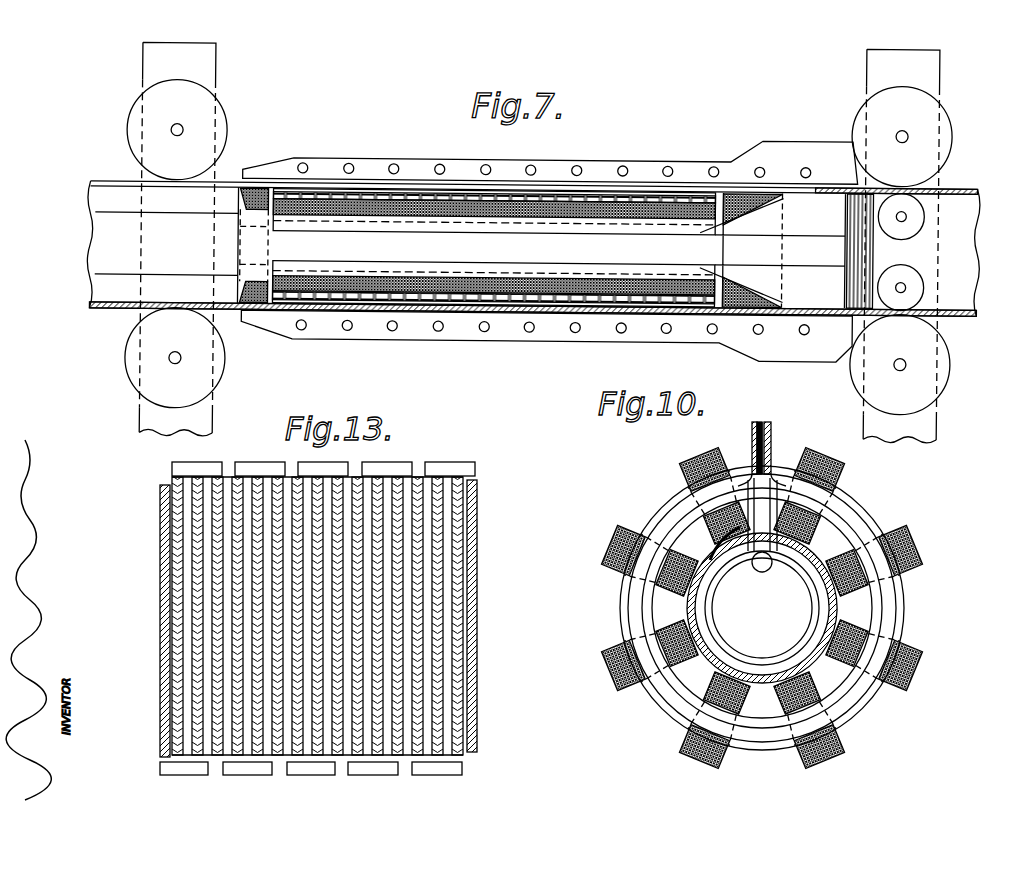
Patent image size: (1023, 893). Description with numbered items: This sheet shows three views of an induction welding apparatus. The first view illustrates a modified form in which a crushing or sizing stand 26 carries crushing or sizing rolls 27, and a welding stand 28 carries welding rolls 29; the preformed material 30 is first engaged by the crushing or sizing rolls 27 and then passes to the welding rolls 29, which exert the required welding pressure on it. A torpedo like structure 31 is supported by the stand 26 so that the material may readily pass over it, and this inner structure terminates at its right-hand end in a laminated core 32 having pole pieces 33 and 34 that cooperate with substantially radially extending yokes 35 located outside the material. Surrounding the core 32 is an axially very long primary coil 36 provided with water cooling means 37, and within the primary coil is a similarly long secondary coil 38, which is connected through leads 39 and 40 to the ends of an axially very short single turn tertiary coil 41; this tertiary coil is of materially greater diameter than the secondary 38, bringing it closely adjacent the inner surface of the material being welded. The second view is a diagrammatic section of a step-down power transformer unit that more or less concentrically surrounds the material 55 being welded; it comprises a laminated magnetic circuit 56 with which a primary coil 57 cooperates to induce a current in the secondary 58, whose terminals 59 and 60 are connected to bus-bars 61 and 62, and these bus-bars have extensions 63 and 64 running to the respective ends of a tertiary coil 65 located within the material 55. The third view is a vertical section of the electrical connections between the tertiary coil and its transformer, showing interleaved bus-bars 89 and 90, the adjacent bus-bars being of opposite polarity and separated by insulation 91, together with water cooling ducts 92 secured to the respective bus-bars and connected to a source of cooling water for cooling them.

In FIG. 7, the crushing or sizing stand 26 is at (200, 70).
In FIG. 7, the crushing or sizing rolls 27 is at (220, 116).
In FIG. 7, the welding stand 28 is at (927, 76).
In FIG. 7, the welding rolls 29 is at (942, 117).
In FIG. 7, the preformed material 30 is at (313, 184).
In FIG. 7, the torpedo like structure 31 is at (103, 240).
In FIG. 7, the laminated core 32 is at (683, 254).
In FIG. 7, the pole piece 33 is at (260, 297).
In FIG. 7, the pole piece 34 is at (747, 304).
In FIG. 7, the yokes 35 is at (663, 161).
In FIG. 7, the primary coil 36 is at (567, 207).
In FIG. 7, the water cooling means 37 is at (494, 251).
In FIG. 7, the secondary coil 38 is at (427, 228).
In FIG. 7, the lead 39 is at (767, 291).
In FIG. 7, the lead 40 is at (763, 208).
In FIG. 7, the tertiary coil 41 is at (837, 279).
In FIG. 10, the material 55 is at (810, 563).
In FIG. 10, the laminated magnetic circuit 56 is at (890, 712).
In FIG. 10, the primary coil 57 is at (753, 738).
In FIG. 10, the secondary 58 is at (618, 613).
In FIG. 10, the terminal 59 is at (775, 470).
In FIG. 10, the terminal 60 is at (745, 470).
In FIG. 10, the bus-bar 61 is at (770, 430).
In FIG. 10, the bus-bar 62 is at (752, 433).
In FIG. 10, the extension 63 is at (770, 565).
In FIG. 10, the extension 64 is at (748, 540).
In FIG. 10, the tertiary coil 65 is at (730, 650).
In FIG. 13, the bus-bar 89 is at (165, 585).
In FIG. 13, the bus-bar 90 is at (173, 523).
In FIG. 13, the insulation 91 is at (172, 618).
In FIG. 13, the water cooling ducts 92 is at (438, 472).